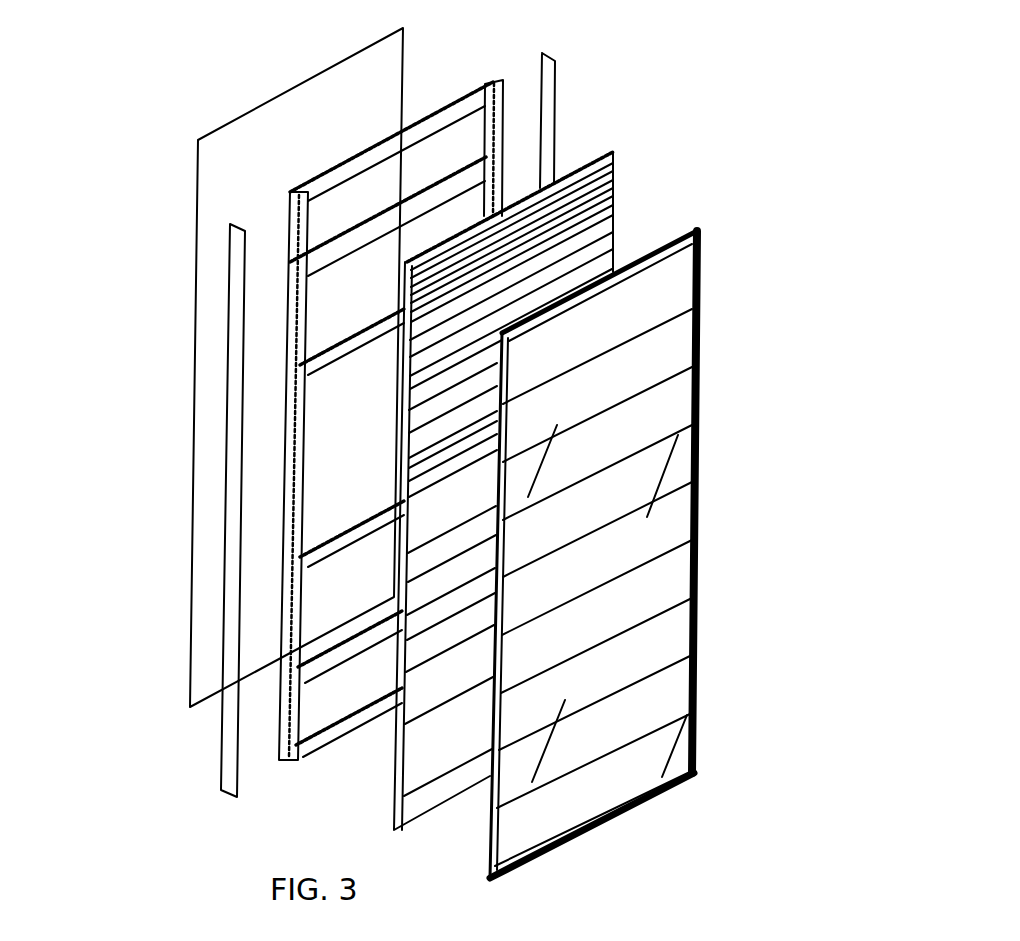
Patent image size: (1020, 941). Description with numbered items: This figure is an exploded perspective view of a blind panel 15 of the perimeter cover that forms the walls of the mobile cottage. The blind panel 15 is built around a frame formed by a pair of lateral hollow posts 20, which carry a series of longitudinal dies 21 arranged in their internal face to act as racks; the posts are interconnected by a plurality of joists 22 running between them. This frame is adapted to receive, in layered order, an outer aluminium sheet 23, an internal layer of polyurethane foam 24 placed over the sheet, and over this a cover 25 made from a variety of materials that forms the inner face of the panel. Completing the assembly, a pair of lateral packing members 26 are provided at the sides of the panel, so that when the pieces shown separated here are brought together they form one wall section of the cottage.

The blind panel 15 is at (742, 325).
The lateral hollow posts 20 is at (376, 382).
The longitudinal dies 21 is at (292, 630).
The joists 22 is at (324, 558).
The outer aluminium sheet 23 is at (253, 163).
The polyurethane foam layer 24 is at (620, 213).
The cover 25 is at (658, 537).
The lateral packing members 26 is at (230, 398).